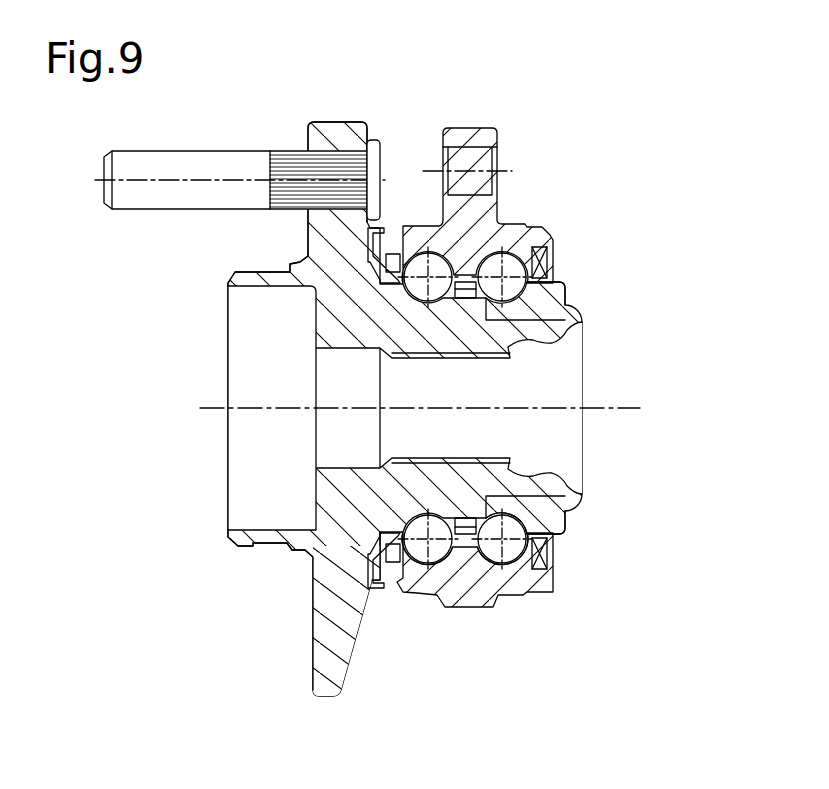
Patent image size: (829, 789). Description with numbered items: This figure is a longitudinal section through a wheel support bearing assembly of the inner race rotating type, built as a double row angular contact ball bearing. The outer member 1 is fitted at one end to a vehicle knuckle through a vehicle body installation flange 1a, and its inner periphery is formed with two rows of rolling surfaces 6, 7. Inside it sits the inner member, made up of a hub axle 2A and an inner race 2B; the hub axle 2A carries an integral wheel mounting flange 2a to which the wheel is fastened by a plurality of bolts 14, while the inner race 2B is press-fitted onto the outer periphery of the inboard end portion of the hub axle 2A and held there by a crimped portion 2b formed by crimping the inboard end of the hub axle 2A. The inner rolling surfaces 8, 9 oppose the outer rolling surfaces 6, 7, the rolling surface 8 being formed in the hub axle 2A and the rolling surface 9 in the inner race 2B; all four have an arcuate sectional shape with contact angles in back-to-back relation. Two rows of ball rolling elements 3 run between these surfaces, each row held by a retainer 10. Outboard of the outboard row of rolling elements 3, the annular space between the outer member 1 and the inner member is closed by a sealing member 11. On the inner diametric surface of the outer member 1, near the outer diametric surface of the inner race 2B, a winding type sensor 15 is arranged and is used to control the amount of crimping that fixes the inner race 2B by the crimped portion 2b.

The outer member 1 is at (541, 215).
The vehicle body installation flange 1a is at (476, 142).
The hub axle 2A is at (367, 312).
The inner race 2B is at (512, 352).
The wheel mounting flange 2a is at (340, 137).
The crimped portion 2b is at (568, 312).
The rolling elements 3 is at (515, 594).
The rolling surface 6 is at (432, 595).
The rolling surface 7 is at (481, 600).
The rolling surface 8 is at (378, 522).
The rolling surface 9 is at (524, 547).
The retainer 10 is at (466, 580).
The sealing member 11 is at (372, 255).
The bolts 14 is at (202, 168).
The sensor 15 is at (548, 262).